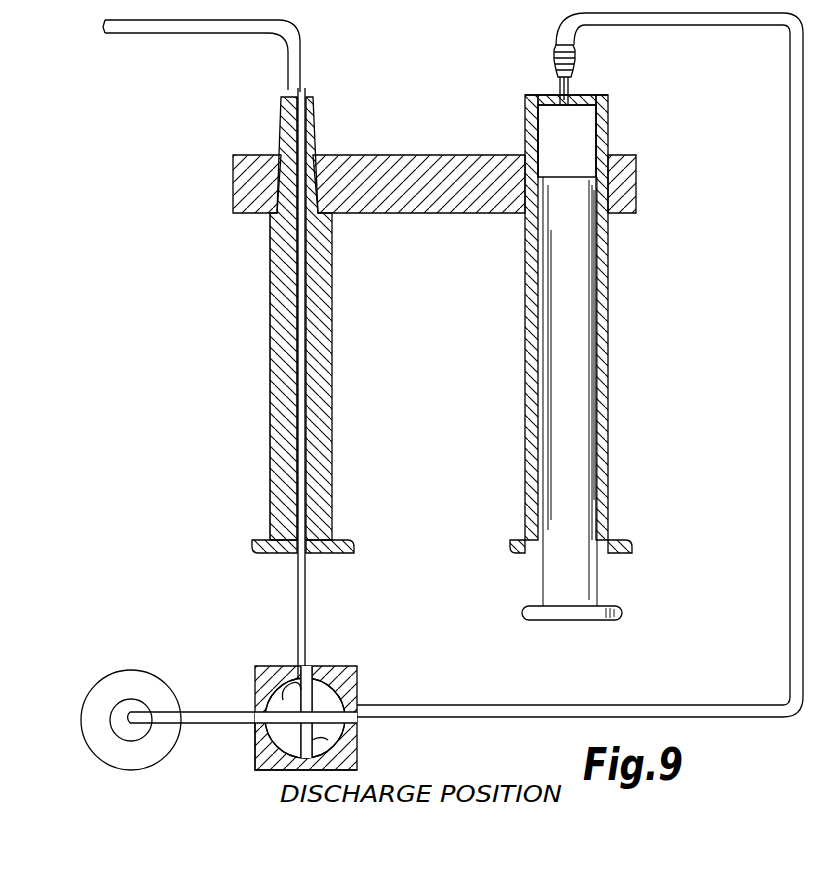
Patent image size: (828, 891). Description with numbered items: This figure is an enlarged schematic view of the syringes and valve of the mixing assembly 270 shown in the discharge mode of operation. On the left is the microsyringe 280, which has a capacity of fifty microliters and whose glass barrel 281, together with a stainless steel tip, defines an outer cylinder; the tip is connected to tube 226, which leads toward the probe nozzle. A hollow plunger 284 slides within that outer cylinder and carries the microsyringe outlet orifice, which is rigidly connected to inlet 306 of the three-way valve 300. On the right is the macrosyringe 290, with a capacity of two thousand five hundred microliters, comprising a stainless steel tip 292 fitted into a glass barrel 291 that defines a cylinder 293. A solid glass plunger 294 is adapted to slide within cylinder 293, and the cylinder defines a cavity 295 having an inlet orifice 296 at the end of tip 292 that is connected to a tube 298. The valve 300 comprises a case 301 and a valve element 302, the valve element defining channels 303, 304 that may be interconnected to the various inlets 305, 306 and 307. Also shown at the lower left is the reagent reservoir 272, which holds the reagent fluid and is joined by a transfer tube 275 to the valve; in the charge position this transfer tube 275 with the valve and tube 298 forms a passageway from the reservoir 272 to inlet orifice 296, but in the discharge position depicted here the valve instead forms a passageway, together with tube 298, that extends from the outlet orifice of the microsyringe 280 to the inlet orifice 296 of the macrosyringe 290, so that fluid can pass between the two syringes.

The tube 226 is at (206, 34).
The mixing assembly 270 is at (118, 167).
The reagent reservoir 272 is at (135, 640).
The transfer tube 275 is at (238, 712).
The microsyringe 280 is at (262, 276).
The glass barrel 281 is at (270, 358).
The hollow plunger 284 is at (298, 588).
The macrosyringe 290 is at (640, 393).
The glass barrel 291 is at (527, 300).
The stainless steel tip 292 is at (568, 87).
The cylinder 293 is at (600, 130).
The solid glass plunger 294 is at (598, 590).
The cavity 295 is at (553, 142).
The inlet orifice 296 is at (554, 46).
The tube 298 is at (750, 26).
The 3-way valve 300 is at (408, 685).
The case 301 is at (325, 676).
The valve element 302 is at (350, 692).
The channel 303 is at (335, 740).
The channel 304 is at (288, 683).
The inlet 305 is at (258, 735).
The inlet 306 is at (307, 665).
The inlet 307 is at (360, 710).